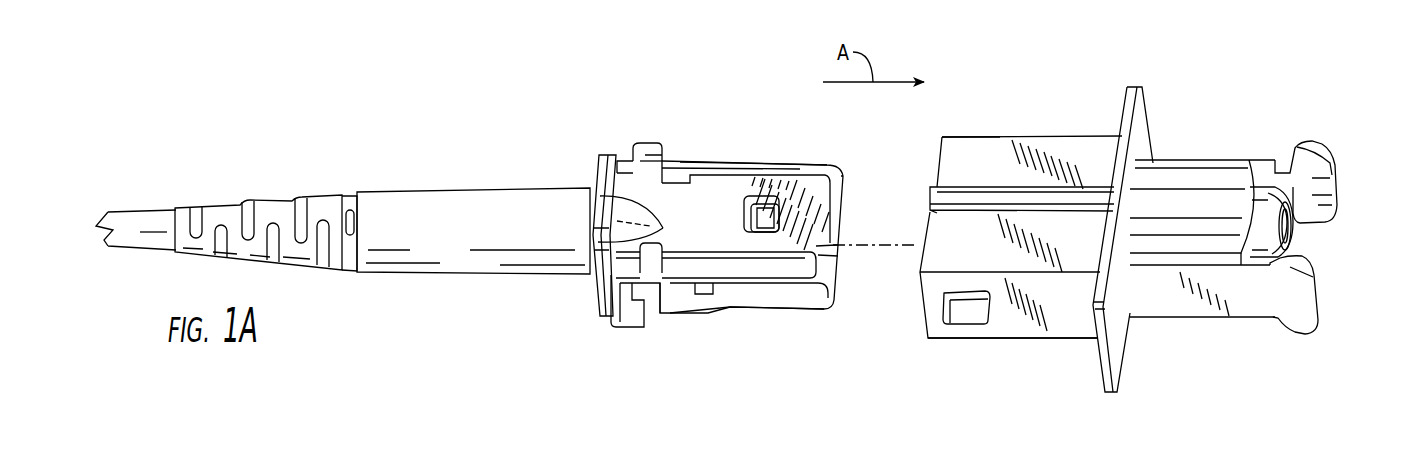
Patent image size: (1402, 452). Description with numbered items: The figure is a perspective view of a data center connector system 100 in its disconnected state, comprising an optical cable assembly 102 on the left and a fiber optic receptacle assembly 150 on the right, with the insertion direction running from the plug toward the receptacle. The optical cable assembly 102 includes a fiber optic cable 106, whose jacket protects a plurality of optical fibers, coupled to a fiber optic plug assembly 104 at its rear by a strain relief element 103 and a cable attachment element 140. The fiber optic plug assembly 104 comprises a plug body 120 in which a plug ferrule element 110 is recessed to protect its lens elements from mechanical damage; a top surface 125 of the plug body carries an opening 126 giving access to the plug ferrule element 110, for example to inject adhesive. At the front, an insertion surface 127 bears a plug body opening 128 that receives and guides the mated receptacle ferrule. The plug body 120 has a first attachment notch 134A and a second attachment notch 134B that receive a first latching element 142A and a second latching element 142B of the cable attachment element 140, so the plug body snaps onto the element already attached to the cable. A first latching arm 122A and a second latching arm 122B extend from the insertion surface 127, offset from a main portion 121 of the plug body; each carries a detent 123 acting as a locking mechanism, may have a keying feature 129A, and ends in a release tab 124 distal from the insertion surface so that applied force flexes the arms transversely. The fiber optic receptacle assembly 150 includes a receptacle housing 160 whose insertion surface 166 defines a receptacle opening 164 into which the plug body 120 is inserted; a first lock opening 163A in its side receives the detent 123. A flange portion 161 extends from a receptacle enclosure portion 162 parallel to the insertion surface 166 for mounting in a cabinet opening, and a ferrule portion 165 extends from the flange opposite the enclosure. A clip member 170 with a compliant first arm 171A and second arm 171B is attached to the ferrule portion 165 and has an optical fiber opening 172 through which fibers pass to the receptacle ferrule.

The data center connector system 100 is at (551, 95).
The optical cable assembly 102 is at (745, 117).
The strain relief element 103 is at (395, 184).
The fiber optic plug assembly 104 is at (816, 151).
The fiber optic cable 106 is at (165, 192).
The plug ferrule element 110 is at (760, 220).
The plug body 120 is at (706, 188).
The main portion 121 is at (688, 250).
The first latching arm 122A is at (706, 317).
The second latching arm 122B is at (764, 162).
The detent 123 is at (718, 162).
The release tab 124 is at (640, 145).
The top surface 125 is at (817, 251).
The opening 126 is at (748, 220).
The insertion surface 127 is at (848, 188).
The plug body opening 128 is at (838, 243).
The keying feature 129A is at (747, 308).
The first attachment notch 134A is at (655, 227).
The second attachment notch 134B is at (640, 195).
The cable attachment element 140 is at (596, 156).
The first latching element 142A is at (642, 262).
The second latching element 142B is at (652, 160).
The fiber optic receptacle assembly 150 is at (1038, 105).
The receptacle housing 160 is at (991, 133).
The flange portion 161 is at (1131, 354).
The receptacle enclosure portion 162 is at (1033, 340).
The first lock opening 163A is at (970, 320).
The receptacle opening 164 is at (920, 222).
The ferrule portion 165 is at (1184, 170).
The insertion surface 166 is at (937, 158).
The clip member 170 is at (1278, 142).
The first arm 171A is at (1306, 336).
The second arm 171B is at (1311, 143).
The optical fiber opening 172 is at (1289, 232).